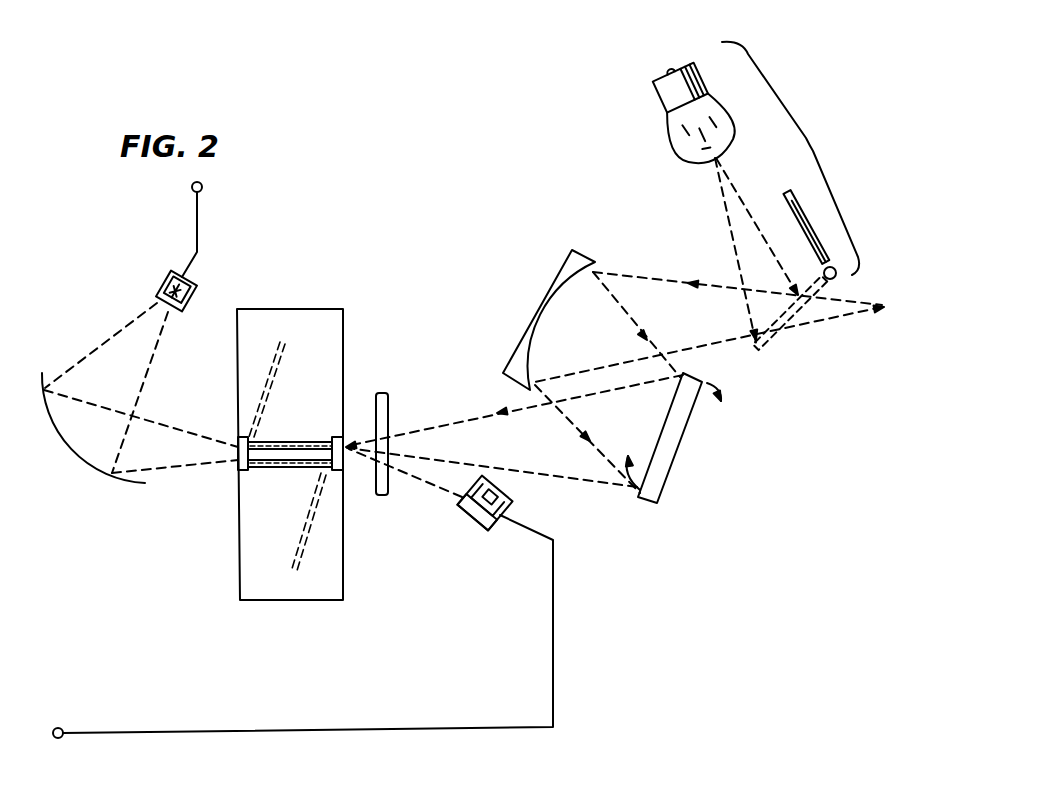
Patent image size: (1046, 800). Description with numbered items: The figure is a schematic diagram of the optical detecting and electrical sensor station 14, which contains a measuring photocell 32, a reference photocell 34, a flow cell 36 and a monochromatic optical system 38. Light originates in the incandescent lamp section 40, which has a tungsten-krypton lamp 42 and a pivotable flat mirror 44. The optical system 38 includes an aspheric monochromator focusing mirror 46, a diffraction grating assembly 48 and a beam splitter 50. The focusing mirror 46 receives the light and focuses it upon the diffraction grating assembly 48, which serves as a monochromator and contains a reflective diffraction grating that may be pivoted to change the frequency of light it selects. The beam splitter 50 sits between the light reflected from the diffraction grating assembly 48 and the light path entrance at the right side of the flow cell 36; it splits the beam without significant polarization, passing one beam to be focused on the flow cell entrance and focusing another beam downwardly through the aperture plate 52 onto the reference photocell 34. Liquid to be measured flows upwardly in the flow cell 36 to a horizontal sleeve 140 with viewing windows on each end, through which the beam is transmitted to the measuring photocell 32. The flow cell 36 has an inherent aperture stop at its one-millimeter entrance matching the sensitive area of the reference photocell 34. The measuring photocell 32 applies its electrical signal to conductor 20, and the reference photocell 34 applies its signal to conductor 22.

The optical detecting and electrical sensor station 14 is at (335, 240).
The conductor 20 is at (196, 212).
The conductor 22 is at (118, 733).
The measuring photocell 32 is at (203, 272).
The reference photocell 34 is at (528, 503).
The flow cell 36 is at (297, 322).
The monochromatic optical system 38 is at (610, 357).
The incandescent lamp section 40 is at (735, 196).
The tungsten-krypton lamp 42 is at (656, 100).
The pivotable flat mirror 44 is at (797, 200).
The aspheric monochromator focusing mirror 46 is at (555, 283).
The diffraction grating assembly 48 is at (665, 473).
The beam splitter 50 is at (388, 398).
The aperture plate 52 is at (477, 516).
The horizontal sleeve 140 is at (303, 441).